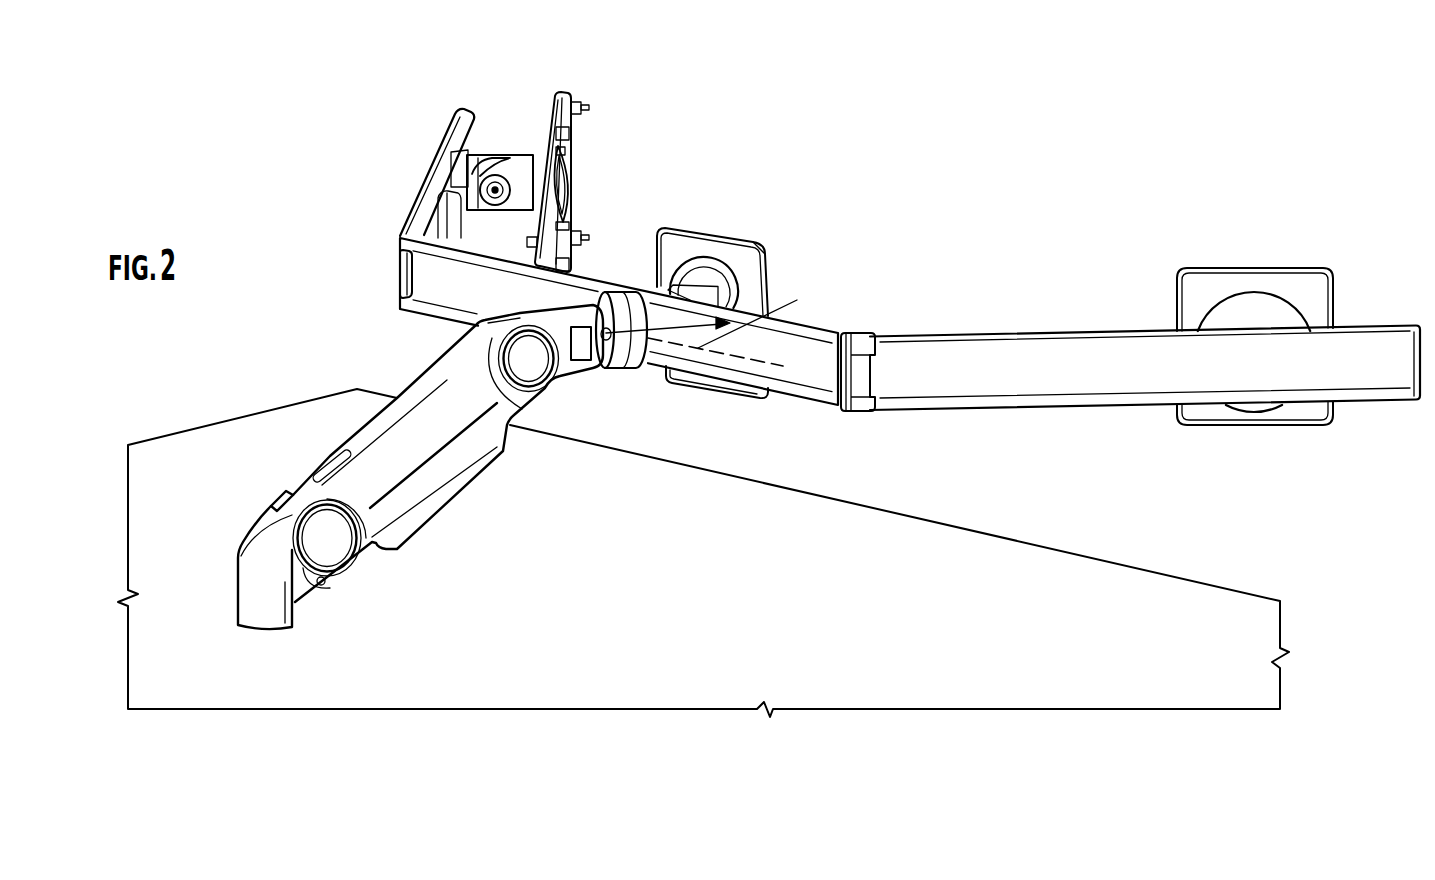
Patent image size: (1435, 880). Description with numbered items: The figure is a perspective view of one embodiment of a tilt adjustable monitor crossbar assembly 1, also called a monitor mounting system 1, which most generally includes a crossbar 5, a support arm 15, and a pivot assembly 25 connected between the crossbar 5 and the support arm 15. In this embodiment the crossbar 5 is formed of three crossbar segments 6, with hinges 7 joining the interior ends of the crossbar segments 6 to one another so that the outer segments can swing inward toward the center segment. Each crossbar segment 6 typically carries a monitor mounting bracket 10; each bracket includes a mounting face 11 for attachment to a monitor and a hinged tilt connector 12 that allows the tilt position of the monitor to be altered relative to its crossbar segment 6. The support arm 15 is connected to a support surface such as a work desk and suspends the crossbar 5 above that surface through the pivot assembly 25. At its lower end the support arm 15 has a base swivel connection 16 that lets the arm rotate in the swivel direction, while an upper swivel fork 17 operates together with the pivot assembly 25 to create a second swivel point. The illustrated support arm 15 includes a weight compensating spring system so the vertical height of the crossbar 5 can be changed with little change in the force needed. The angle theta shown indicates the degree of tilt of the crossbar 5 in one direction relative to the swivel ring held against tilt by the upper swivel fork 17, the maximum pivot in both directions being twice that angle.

The tilt adjustable monitor crossbar assembly 1 is at (851, 154).
The crossbar 5 is at (912, 304).
The crossbar segment 6 is at (452, 126).
The hinge 7 is at (400, 269).
The monitor mounting bracket 10 is at (557, 96).
The mounting face 11 is at (574, 158).
The tilt connector 12 is at (489, 158).
The support arm 15 is at (343, 421).
The base swivel connection 16 is at (290, 630).
The upper swivel fork 17 is at (568, 346).
The pivot assembly 25 is at (614, 385).